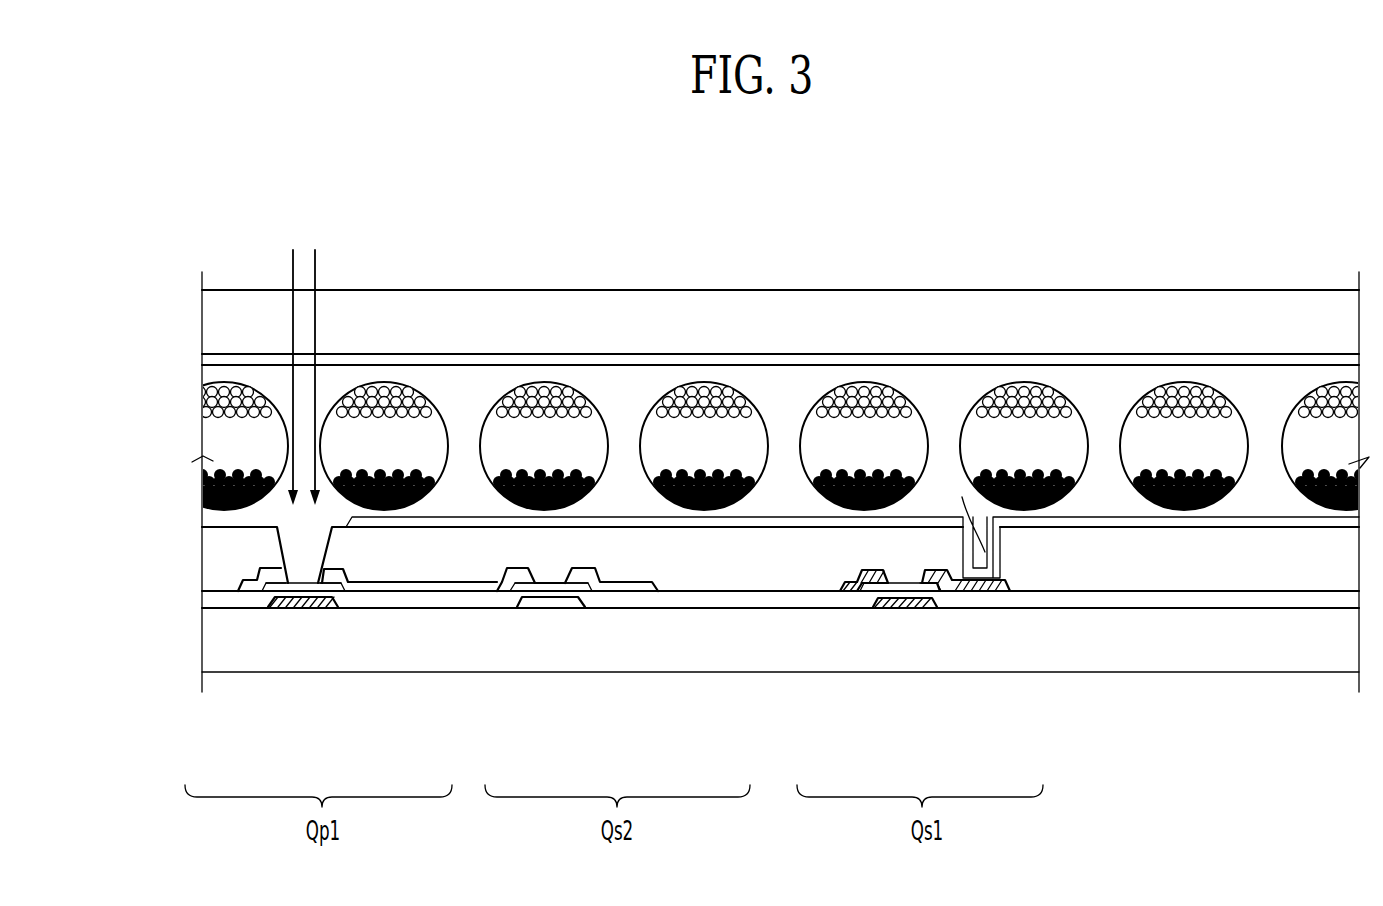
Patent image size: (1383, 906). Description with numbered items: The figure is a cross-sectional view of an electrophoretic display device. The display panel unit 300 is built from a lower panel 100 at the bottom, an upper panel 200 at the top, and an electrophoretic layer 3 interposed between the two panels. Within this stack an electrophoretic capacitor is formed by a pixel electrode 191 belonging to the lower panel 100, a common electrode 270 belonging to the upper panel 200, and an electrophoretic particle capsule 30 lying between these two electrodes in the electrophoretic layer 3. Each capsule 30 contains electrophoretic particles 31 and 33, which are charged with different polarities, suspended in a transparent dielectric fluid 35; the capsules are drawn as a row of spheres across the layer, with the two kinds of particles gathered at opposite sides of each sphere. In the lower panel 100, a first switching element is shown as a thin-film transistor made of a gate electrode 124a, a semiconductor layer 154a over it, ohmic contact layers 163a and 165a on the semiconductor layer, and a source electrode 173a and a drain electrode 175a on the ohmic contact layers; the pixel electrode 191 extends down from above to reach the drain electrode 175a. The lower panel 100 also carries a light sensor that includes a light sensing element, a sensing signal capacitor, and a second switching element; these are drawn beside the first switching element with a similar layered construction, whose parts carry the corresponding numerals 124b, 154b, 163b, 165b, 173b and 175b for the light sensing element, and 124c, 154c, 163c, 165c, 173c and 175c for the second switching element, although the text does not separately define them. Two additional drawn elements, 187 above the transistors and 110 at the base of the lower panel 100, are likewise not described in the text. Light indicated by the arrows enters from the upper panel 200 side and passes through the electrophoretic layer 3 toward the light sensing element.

The display panel unit 300 is at (791, 177).
The upper panel 200 is at (747, 294).
The common electrode 270 is at (1180, 360).
The electrophoretic layer 3 is at (770, 347).
The electrophoretic particle capsule 30 is at (771, 339).
The transparent dielectric fluid 35 is at (492, 435).
The electrophoretic particle 31 is at (533, 385).
The electrophoretic particle 33 is at (582, 490).
The organic insulating layer 187 is at (288, 562).
The pixel electrode 191 is at (1145, 518).
The lower panel 100 is at (748, 634).
The insulating substrate 110 is at (761, 655).
The gate electrode of Qp1 124b is at (302, 602).
The semiconductor of Qp1 154b is at (313, 585).
The ohmic contact of Qp1 163b is at (270, 582).
The ohmic contact of Qp1 165b is at (337, 585).
The source electrode of Qp1 173b is at (248, 585).
The drain electrode of Qp1 175b is at (368, 587).
The gate electrode of Qs2 124c is at (553, 600).
The semiconductor of Qs2 154c is at (578, 584).
The ohmic contact of Qs2 163c is at (520, 585).
The ohmic contact of Qs2 165c is at (623, 584).
The source electrode of Qs2 173c is at (492, 592).
The drain electrode of Qs2 175c is at (650, 584).
The gate electrode 124a is at (893, 604).
The semiconductor layer 154a is at (912, 588).
The ohmic contact layer 163a is at (862, 592).
The ohmic contact layer 165a is at (930, 588).
The source electrode 173a is at (845, 588).
The drain electrode 175a is at (985, 592).